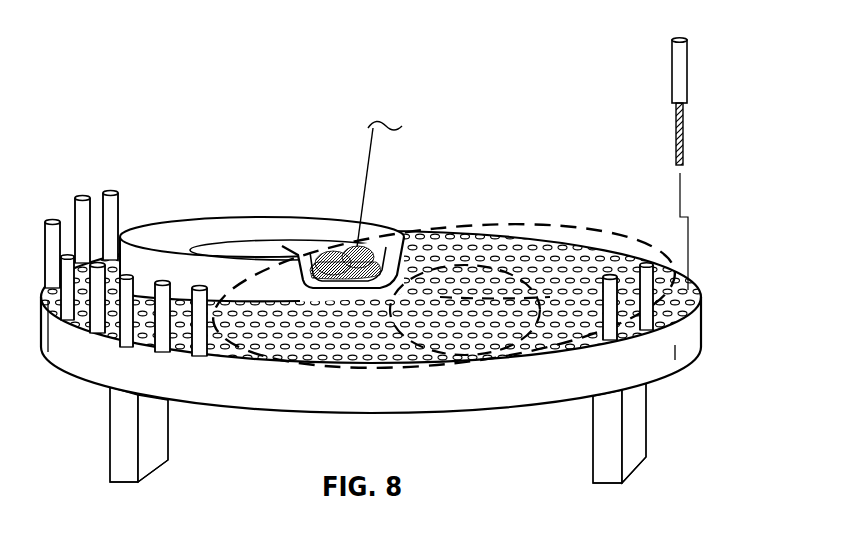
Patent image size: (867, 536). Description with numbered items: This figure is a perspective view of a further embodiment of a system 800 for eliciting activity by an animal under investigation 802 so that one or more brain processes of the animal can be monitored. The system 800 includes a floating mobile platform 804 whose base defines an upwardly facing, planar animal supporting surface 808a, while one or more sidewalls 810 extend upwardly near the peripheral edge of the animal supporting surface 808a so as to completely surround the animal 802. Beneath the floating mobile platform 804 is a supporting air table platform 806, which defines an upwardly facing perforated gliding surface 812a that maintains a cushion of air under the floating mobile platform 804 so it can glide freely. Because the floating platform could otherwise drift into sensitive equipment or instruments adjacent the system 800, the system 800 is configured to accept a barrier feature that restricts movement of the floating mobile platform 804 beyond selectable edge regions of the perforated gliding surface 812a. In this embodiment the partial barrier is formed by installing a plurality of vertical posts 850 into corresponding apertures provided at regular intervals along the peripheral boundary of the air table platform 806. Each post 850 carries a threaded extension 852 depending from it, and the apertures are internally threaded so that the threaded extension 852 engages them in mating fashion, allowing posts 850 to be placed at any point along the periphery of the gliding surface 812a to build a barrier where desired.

The system 800 is at (395, 255).
The animal under investigation 802 is at (330, 248).
The floating mobile platform 804 is at (262, 237).
The supporting air table platform 806 is at (663, 390).
The animal supporting surface 808a is at (247, 250).
The sidewall 810 is at (206, 277).
The perforated gliding surface 812a is at (503, 240).
The vertical post 850 is at (682, 78).
The threaded extension 852 is at (682, 148).